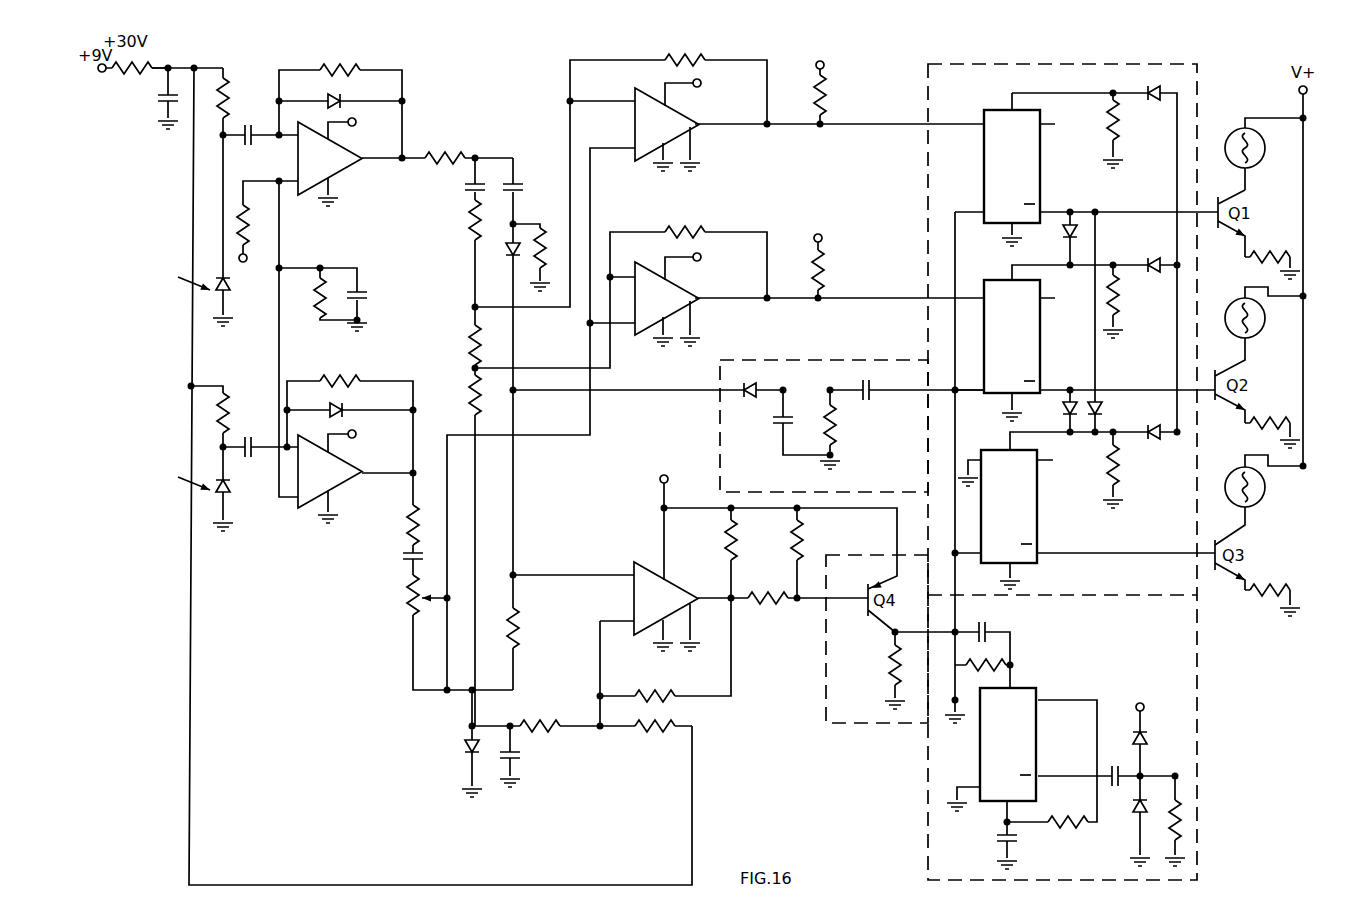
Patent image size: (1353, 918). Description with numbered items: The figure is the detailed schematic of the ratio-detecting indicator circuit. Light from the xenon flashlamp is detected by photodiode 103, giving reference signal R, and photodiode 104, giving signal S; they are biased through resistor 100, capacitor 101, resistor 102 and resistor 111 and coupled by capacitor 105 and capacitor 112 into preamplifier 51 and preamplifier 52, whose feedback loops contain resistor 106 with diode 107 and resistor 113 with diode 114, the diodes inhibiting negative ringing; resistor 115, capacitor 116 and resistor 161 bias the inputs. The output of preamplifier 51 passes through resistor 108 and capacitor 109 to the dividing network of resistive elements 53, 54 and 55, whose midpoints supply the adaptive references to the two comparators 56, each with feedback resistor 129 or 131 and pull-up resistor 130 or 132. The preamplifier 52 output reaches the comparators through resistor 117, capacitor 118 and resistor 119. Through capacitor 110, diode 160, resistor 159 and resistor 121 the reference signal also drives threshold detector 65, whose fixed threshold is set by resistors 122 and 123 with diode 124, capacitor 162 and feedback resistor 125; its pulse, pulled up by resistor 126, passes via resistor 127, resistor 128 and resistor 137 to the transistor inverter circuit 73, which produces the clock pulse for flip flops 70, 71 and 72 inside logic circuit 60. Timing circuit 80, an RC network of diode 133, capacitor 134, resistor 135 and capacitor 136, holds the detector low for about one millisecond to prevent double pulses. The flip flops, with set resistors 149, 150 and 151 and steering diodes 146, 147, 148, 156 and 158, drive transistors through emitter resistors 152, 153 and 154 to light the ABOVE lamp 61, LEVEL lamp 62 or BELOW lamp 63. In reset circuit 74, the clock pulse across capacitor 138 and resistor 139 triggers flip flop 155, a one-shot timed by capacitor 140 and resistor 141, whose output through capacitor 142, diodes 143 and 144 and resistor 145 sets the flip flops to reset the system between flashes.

The preamplifier 51 is at (353, 170).
The preamplifier 52 is at (353, 484).
The resistive element 53 is at (462, 230).
The resistive element 54 is at (462, 339).
The resistive element 55 is at (482, 398).
The comparators 56 is at (636, 166).
The logic circuit 60 is at (1199, 65).
The ABOVE lamp 61 is at (1272, 142).
The LEVEL lamp 62 is at (1272, 322).
The BELOW lamp 63 is at (1272, 488).
The threshold detector 65 is at (643, 565).
The flip flop 70 is at (1054, 167).
The flip flop 71 is at (1056, 338).
The flip flop 72 is at (1056, 502).
The transistor Q4 inverter circuit 73 is at (848, 556).
The reset circuit 74 is at (1198, 661).
The timing circuit 80 is at (773, 361).
The resistor 100 is at (145, 60).
The capacitor 101 is at (150, 100).
The resistor 102 is at (231, 86).
The photodiode 103 is at (235, 302).
The photodiode 104 is at (232, 488).
The capacitor 105 is at (244, 124).
The resistor 106 is at (339, 63).
The diode 107 is at (346, 97).
The resistor 108 is at (442, 148).
The capacitor 109 is at (452, 188).
The capacitor 110 is at (522, 179).
The resistor 111 is at (232, 410).
The capacitor 112 is at (244, 440).
The resistor 113 is at (341, 378).
The diode 114 is at (351, 403).
The resistor 115 is at (311, 308).
The capacitor 116 is at (381, 297).
The resistor 117 is at (400, 531).
The capacitor 118 is at (394, 566).
The resistor 119 is at (401, 612).
The resistor 121 is at (522, 638).
The resistor 122 is at (529, 720).
The resistor 123 is at (666, 720).
The diode 124 is at (450, 761).
The resistor 125 is at (660, 690).
The resistor 126 is at (743, 538).
The resistor 127 is at (748, 588).
The resistor 128 is at (808, 538).
The resistor 129 is at (688, 58).
The resistor 130 is at (832, 92).
The resistor 131 is at (688, 225).
The resistor 132 is at (832, 258).
The diode 133 is at (761, 382).
The capacitor 134 is at (762, 437).
The resistor 135 is at (841, 437).
The capacitor 136 is at (873, 382).
The resistor 137 is at (875, 662).
The capacitor 138 is at (996, 623).
The resistor 139 is at (968, 658).
The capacitor 140 is at (1028, 842).
The resistor 141 is at (1046, 812).
The capacitor 142 is at (1114, 764).
The diode 143 is at (1134, 730).
The diode 144 is at (1128, 832).
The resistor 145 is at (1193, 820).
The diode 146 is at (1151, 85).
The diode 147 is at (1147, 253).
The diode 148 is at (1147, 428).
The resistor 149 is at (1129, 132).
The resistor 150 is at (1129, 305).
The resistor 151 is at (1124, 473).
The resistor 152 is at (1256, 248).
The resistor 153 is at (1256, 417).
The resistor 154 is at (1261, 578).
The flip flop 155 is at (1043, 738).
The diode 156 is at (1058, 247).
The diode 158 is at (1107, 410).
The resistor 159 is at (543, 230).
The diode 160 is at (505, 272).
The resistor 161 is at (256, 226).
The capacitor 162 is at (532, 762).